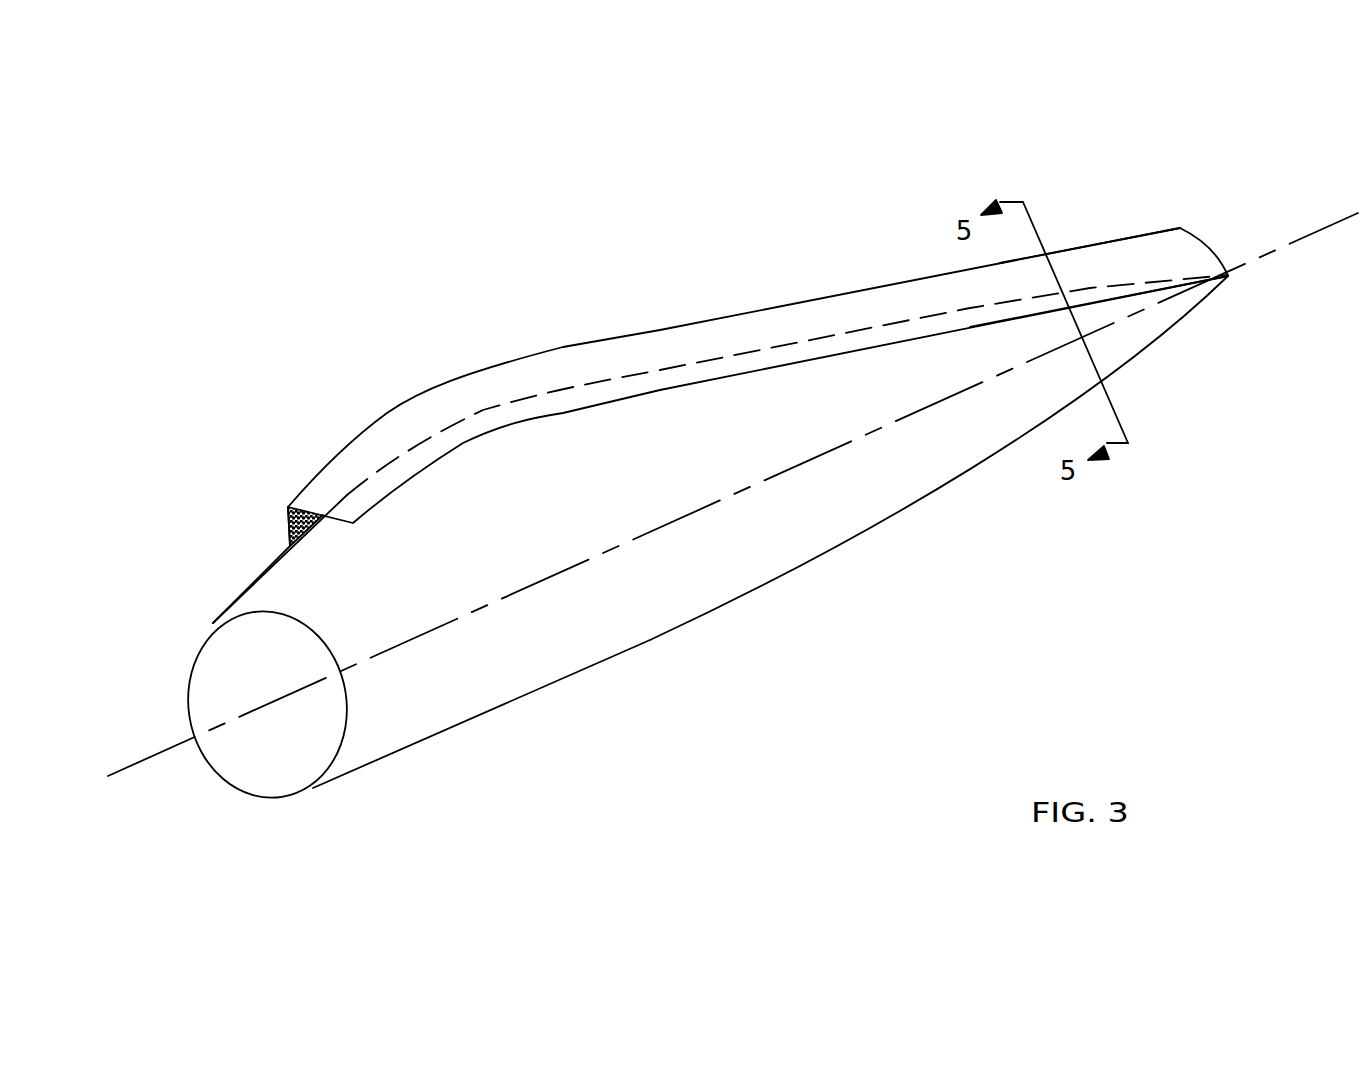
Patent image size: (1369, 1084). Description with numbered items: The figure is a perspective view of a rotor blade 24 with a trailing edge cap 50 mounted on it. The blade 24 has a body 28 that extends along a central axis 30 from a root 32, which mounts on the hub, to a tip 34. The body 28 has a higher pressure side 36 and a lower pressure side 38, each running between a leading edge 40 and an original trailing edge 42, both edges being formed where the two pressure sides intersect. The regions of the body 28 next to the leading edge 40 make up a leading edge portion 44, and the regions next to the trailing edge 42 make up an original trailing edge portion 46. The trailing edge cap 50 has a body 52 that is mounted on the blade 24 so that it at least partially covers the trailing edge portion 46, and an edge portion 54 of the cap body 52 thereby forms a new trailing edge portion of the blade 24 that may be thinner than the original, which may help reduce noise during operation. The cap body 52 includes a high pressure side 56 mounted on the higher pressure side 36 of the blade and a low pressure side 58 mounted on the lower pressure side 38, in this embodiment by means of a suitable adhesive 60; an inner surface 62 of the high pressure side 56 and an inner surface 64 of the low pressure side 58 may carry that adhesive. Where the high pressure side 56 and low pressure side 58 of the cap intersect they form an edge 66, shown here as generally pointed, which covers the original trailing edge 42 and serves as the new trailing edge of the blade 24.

The blade 24 is at (694, 510).
The body 28 is at (720, 348).
The central axis 30 is at (1301, 240).
The root 32 is at (368, 790).
The tip 34 is at (1209, 231).
The higher pressure side 36 is at (545, 635).
The lower pressure side 38 is at (277, 588).
The leading edge 40 is at (690, 636).
The trailing edge 42 is at (512, 398).
The leading edge portion 44 is at (472, 705).
The trailing edge portion 46 is at (437, 438).
The trailing edge cap 50 is at (928, 255).
The body 52 is at (1099, 253).
The edge portion 54 is at (788, 320).
The high pressure side 56 is at (728, 333).
The low pressure side 58 is at (288, 533).
The adhesive 60 is at (288, 517).
The inner surface 62 is at (313, 500).
The inner surface 64 is at (288, 527).
The edge 66 is at (682, 318).